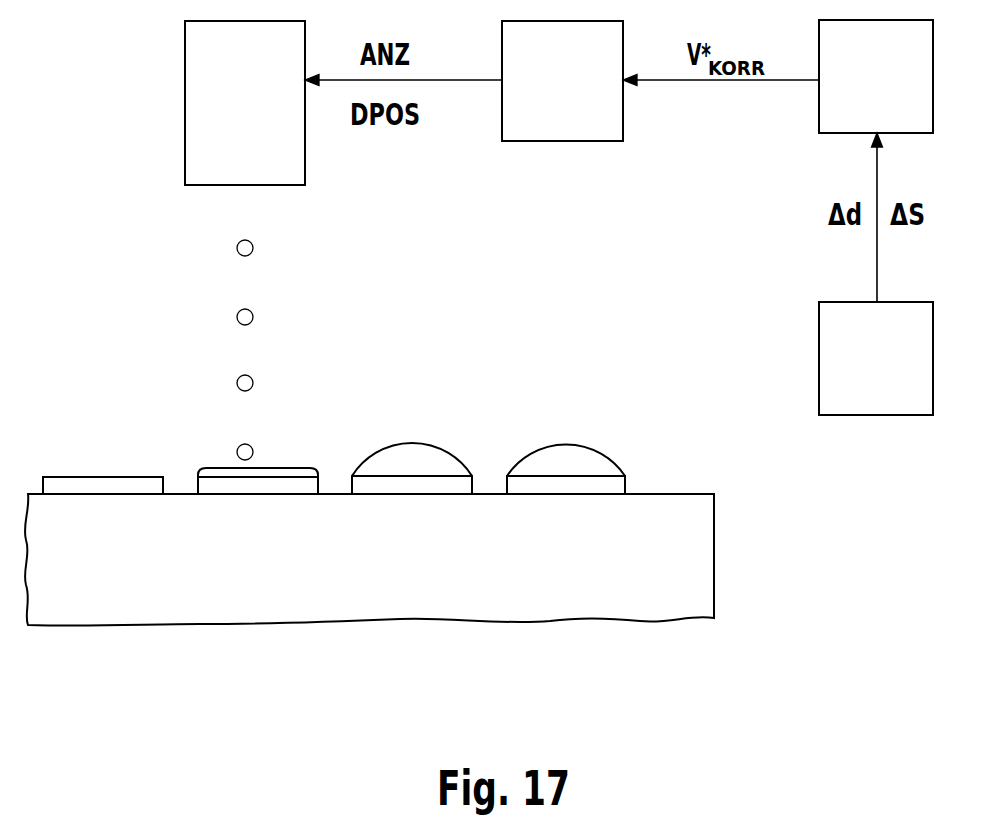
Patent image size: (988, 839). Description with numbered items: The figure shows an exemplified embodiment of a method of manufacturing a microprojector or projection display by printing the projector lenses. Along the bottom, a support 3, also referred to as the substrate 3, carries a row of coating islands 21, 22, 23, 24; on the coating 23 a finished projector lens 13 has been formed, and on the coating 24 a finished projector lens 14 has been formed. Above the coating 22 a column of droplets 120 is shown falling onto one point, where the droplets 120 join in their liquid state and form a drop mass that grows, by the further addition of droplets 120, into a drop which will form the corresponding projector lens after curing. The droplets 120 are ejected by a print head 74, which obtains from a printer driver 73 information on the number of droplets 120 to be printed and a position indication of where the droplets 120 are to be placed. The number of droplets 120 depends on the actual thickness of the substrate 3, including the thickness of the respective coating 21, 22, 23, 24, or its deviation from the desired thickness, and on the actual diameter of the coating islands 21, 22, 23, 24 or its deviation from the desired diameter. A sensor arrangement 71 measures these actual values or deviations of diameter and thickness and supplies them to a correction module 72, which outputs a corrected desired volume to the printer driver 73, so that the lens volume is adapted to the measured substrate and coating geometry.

The print head 74 is at (259, 92).
The printer driver 73 is at (578, 92).
The correction module 72 is at (891, 88).
The sensor arrangement 71 is at (891, 371).
The droplets 120 is at (236, 315).
The support 3 is at (714, 549).
The coating 21 is at (107, 488).
The coating 22 is at (220, 488).
The coating 23 is at (375, 488).
The projector lens 13 is at (418, 458).
The coating 24 is at (605, 488).
The projector lens 14 is at (568, 458).